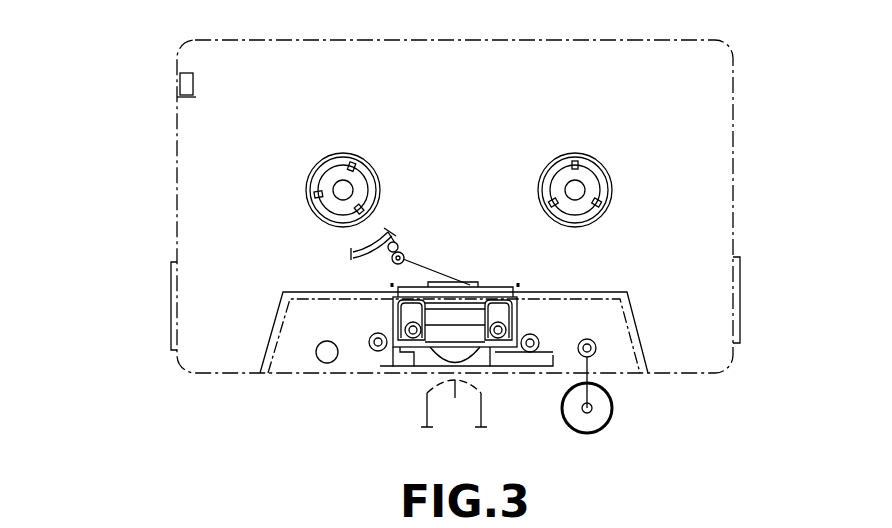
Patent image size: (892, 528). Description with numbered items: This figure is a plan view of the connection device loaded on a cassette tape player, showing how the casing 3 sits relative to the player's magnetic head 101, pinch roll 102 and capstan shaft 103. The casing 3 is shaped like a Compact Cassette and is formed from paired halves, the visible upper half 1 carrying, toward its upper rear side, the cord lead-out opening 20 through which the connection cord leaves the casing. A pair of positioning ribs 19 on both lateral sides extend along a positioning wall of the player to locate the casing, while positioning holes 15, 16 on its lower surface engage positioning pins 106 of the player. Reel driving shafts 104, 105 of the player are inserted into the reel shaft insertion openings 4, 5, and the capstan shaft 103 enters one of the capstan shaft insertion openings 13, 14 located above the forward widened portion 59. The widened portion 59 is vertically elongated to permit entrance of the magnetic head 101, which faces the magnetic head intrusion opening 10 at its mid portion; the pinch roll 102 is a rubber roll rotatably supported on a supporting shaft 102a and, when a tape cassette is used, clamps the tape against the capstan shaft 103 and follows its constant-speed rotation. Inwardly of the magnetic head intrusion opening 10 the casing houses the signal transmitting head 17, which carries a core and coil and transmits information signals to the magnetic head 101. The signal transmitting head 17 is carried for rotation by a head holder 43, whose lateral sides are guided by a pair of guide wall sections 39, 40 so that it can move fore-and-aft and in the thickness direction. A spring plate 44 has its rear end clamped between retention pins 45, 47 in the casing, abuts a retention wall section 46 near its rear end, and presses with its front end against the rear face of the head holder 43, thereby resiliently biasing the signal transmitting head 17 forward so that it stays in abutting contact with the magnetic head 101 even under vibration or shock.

The upper half 1 is at (667, 50).
The casing 3 is at (735, 108).
The reel shaft insertion opening 4 is at (598, 186).
The reel shaft insertion opening 5 is at (320, 160).
The magnetic head intrusion opening 10 is at (482, 375).
The capstan shaft insertion opening 13 is at (322, 362).
The capstan shaft insertion opening 14 is at (582, 340).
The positioning hole 15 is at (375, 352).
The positioning hole 16 is at (530, 352).
The signal transmitting head 17 is at (445, 305).
The positioning rib 19 is at (172, 292).
The cord lead-out opening 20 is at (194, 93).
The guide wall section 39 is at (393, 303).
The guide wall section 40 is at (520, 297).
The head holder 43 is at (470, 283).
The spring plate 44 is at (440, 288).
The retention pin 45 is at (395, 250).
The retention wall section 46 is at (390, 235).
The retention pin 47 is at (408, 257).
The widened portion 59 is at (630, 300).
The magnetic head 101 is at (428, 398).
The pinch roll 102 is at (610, 408).
The supporting shaft 102a is at (592, 412).
The capstan shaft 103 is at (596, 348).
The reel driving shaft 104 is at (578, 187).
The reel driving shaft 105 is at (345, 188).
The positioning pin 106 is at (370, 341).